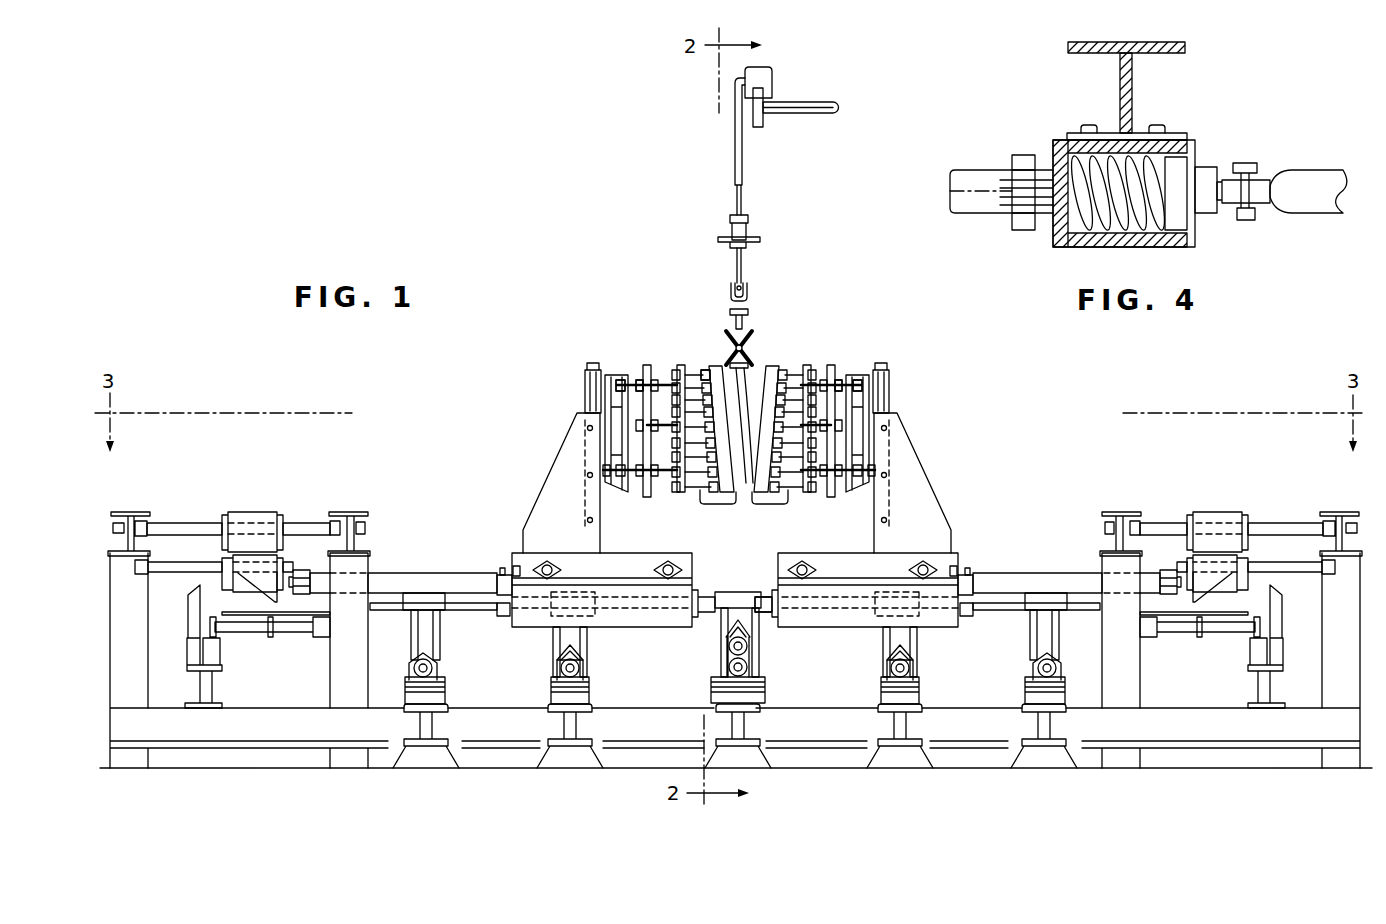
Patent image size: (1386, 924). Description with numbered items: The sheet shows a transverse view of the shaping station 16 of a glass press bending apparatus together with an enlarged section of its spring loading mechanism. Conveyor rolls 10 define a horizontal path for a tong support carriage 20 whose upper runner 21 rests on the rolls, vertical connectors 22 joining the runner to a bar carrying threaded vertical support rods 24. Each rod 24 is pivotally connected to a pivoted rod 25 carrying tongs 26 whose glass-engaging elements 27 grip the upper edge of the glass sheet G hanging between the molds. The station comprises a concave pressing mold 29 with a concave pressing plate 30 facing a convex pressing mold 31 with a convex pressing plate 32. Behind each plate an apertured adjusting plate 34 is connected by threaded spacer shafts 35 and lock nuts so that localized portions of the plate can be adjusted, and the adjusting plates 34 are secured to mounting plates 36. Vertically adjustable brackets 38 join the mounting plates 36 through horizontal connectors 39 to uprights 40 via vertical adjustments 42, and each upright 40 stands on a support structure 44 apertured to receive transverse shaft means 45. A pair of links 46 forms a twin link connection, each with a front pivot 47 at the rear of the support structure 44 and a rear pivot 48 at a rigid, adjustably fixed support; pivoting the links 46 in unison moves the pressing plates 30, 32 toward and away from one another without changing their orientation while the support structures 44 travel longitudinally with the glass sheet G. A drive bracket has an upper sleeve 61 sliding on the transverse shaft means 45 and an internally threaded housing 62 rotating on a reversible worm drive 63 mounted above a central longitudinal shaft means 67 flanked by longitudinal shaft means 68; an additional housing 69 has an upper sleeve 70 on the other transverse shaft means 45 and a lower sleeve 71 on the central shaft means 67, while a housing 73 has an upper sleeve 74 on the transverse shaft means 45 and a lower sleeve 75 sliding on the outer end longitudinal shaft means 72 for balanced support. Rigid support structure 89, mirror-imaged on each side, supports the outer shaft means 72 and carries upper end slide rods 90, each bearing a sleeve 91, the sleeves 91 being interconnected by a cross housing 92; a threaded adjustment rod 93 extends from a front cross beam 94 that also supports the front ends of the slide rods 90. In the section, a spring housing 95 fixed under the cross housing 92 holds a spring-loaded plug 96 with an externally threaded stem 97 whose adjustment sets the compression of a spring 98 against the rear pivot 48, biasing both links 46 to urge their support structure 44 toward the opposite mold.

In FIG. 1, the conveyor rolls 10 is at (762, 126).
In FIG. 1, the shaping station 16 is at (933, 350).
In FIG. 1, the tong support carriage 20 is at (760, 206).
In FIG. 1, the upper runner 21 is at (773, 75).
In FIG. 1, the vertical connectors 22 is at (735, 178).
In FIG. 1, the vertical support rods 24 is at (742, 267).
In FIG. 1, the pivoted rod 25 is at (723, 297).
In FIG. 1, the tong 26 is at (743, 333).
In FIG. 1, the glass-engaging elements 27 is at (722, 372).
In FIG. 1, the concave pressing mold 29 is at (662, 353).
In FIG. 1, the concave pressing plate 30 is at (728, 488).
In FIG. 1, the convex pressing mold 31 is at (793, 331).
In FIG. 1, the convex pressing plate 32 is at (767, 488).
In FIG. 1, the apertured adjusting plate 34 is at (679, 498).
In FIG. 1, the spacer shafts 35 is at (688, 496).
In FIG. 1, the mounting plates 36 is at (646, 495).
In FIG. 1, the vertically adjustable brackets 38 is at (620, 376).
In FIG. 1, the horizontal connectors 39 is at (634, 373).
In FIG. 1, the uprights 40 is at (562, 456).
In FIG. 1, the vertical adjustments 42 is at (586, 391).
In FIG. 1, the support structure 44 is at (512, 558).
In FIG. 1, the transverse shaft means 45 is at (772, 597).
In FIG. 1, the links 46 is at (428, 582).
In FIG. 4, the links 46 is at (1313, 175).
In FIG. 1, the front pivot 47 is at (510, 570).
In FIG. 1, the rear pivot 48 is at (305, 572).
In FIG. 4, the rear pivot 48 is at (1248, 163).
In FIG. 1, the upper sleeve 61 is at (750, 595).
In FIG. 1, the internally threaded housing 62 is at (760, 628).
In FIG. 1, the worm drive 63 is at (745, 645).
In FIG. 1, the central longitudinal shaft means 67 is at (746, 669).
In FIG. 1, the flanking longitudinal shaft means 68 is at (580, 668).
In FIG. 1, the additional housing 69 is at (592, 637).
In FIG. 1, the upper sleeve 70 is at (597, 565).
In FIG. 1, the lower sleeve 71 is at (592, 674).
In FIG. 1, the end longitudinal shaft means 72 is at (434, 667).
In FIG. 1, the housing 73 is at (443, 647).
In FIG. 1, the upper sleeve 74 is at (420, 597).
In FIG. 1, the lower sleeve 75 is at (440, 682).
In FIG. 1, the rigid support structure 89 is at (228, 756).
In FIG. 1, the upper end slide rods 90 is at (203, 523).
In FIG. 1, the sleeve 91 is at (257, 510).
In FIG. 1, the cross housing 92 is at (282, 545).
In FIG. 4, the cross housing 92 is at (1088, 42).
In FIG. 1, the threaded adjustment rod 93 is at (207, 567).
In FIG. 1, the front cross beam 94 is at (348, 512).
In FIG. 1, the spring housing 95 is at (248, 593).
In FIG. 4, the spring housing 95 is at (1110, 242).
In FIG. 4, the spring-loaded plug 96 is at (1203, 167).
In FIG. 4, the stem 97 is at (1082, 170).
In FIG. 4, the spring 98 is at (1137, 160).
In FIG. 1, the glass sheet G is at (748, 495).